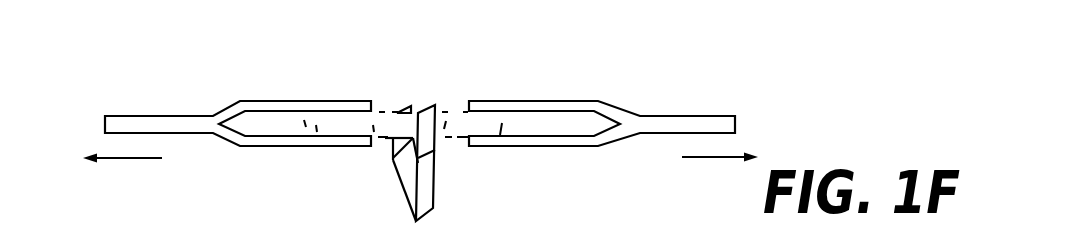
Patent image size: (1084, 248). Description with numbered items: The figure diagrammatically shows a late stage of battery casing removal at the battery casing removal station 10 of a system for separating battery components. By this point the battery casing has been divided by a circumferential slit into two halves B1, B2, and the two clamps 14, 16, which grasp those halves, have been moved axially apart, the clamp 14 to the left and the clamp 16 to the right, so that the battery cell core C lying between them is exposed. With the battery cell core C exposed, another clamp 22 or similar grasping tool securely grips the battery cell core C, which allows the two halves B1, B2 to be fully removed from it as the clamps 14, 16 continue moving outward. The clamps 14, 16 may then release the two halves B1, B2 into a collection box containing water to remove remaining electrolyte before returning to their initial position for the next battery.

The battery casing removal station 10 is at (106, 75).
The clamp 14 is at (258, 146).
The clamp 16 is at (580, 147).
The clamp 22 is at (437, 185).
The casing half B1 is at (339, 121).
The casing half B2 is at (457, 120).
The battery cell core C is at (383, 128).